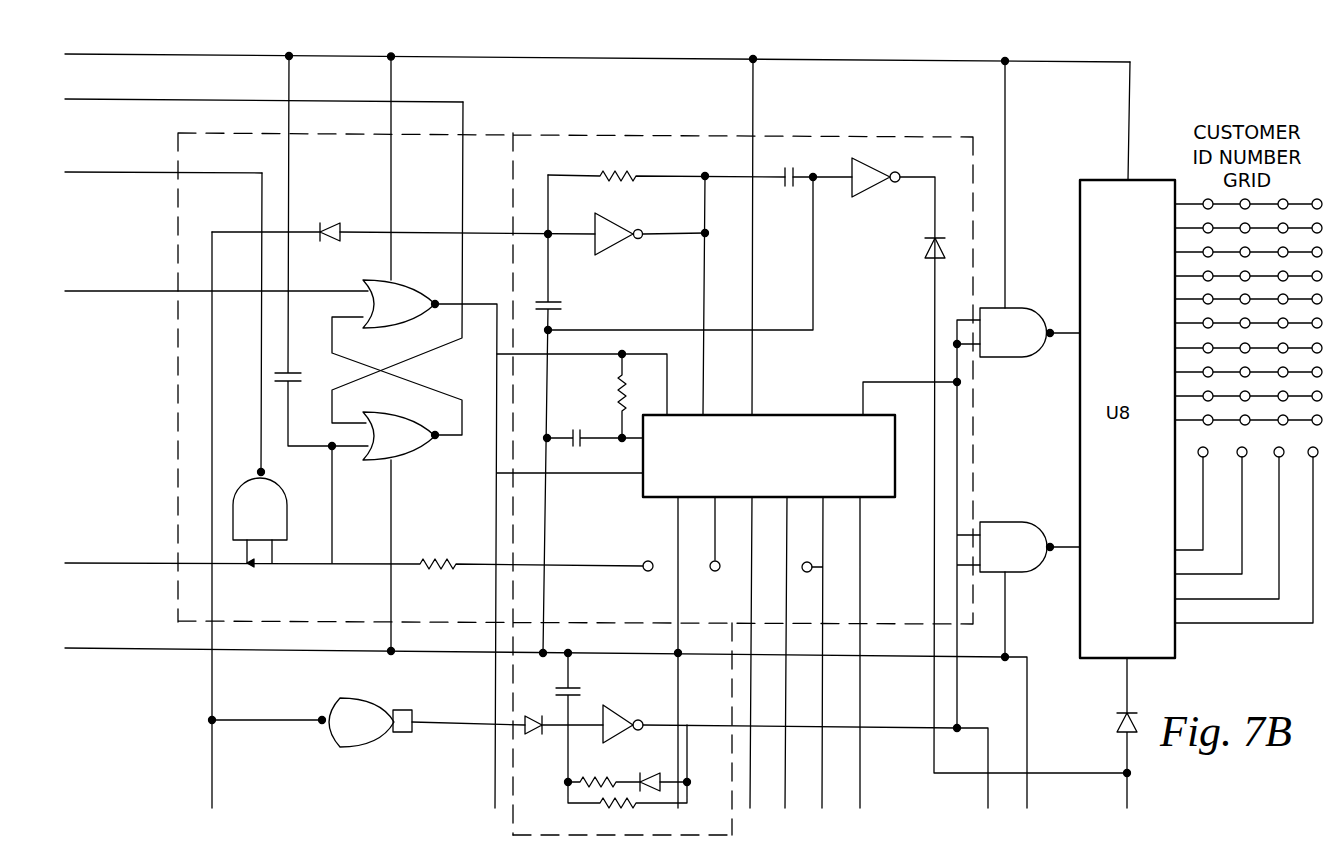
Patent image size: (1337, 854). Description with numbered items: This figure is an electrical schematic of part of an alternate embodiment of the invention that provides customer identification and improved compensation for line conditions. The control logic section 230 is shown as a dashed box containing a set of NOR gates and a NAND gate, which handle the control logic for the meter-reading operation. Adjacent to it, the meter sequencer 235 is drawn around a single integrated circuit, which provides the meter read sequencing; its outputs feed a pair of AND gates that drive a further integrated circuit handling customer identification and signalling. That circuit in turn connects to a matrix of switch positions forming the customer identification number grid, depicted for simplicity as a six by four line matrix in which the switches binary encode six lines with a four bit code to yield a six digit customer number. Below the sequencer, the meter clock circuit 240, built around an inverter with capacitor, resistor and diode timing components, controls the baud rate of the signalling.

The control logic section 230 is at (177, 382).
The meter sequencer 235 is at (703, 135).
The meter clock circuit 240 is at (732, 830).